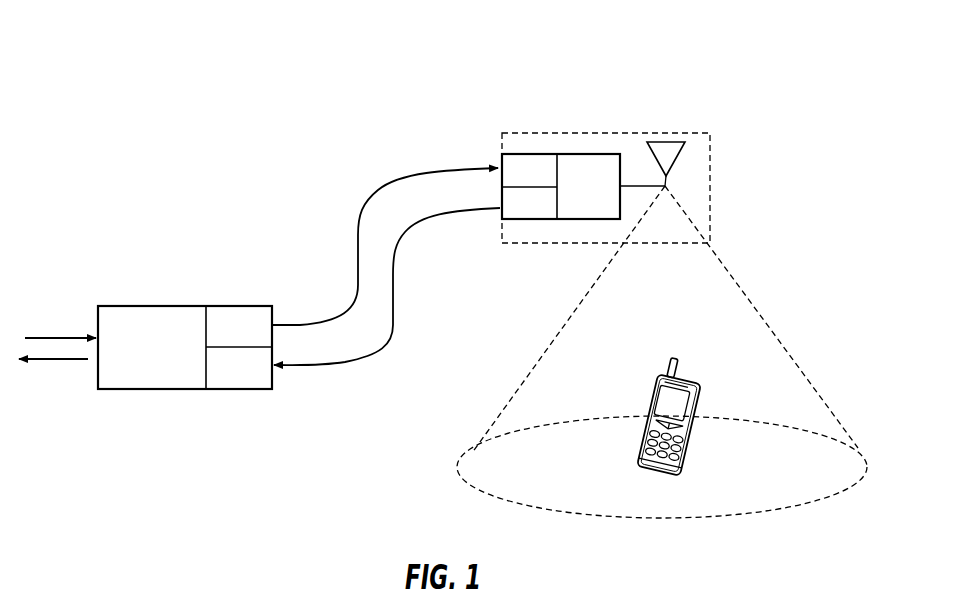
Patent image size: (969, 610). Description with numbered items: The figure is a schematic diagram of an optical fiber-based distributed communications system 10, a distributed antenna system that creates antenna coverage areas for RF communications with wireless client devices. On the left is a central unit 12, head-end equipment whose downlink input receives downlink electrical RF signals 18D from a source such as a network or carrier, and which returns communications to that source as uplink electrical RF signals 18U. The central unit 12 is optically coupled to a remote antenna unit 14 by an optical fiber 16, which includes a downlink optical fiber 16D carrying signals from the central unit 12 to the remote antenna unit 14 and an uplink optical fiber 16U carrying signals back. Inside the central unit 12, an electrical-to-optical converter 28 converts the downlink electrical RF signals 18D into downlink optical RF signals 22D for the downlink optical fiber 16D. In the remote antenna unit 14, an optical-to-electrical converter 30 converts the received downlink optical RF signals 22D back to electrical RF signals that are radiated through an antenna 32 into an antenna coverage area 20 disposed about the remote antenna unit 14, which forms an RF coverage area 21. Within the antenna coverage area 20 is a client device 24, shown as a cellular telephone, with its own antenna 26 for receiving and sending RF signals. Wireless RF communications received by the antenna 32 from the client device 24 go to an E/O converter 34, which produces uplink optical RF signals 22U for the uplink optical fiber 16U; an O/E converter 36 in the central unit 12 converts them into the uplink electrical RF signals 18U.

The optical fiber-based distributed communications system 10 is at (474, 78).
The central unit 12 is at (152, 306).
The remote antenna unit 14 is at (590, 133).
The optical fiber 16 is at (386, 237).
The downlink optical fiber 16D is at (433, 168).
The uplink optical fiber 16U is at (424, 226).
The downlink electrical RF signals 18D is at (50, 334).
The uplink electrical RF signals 18U is at (54, 364).
The antenna coverage area 20 is at (736, 272).
The RF coverage area 21 is at (408, 496).
The downlink optical RF signals 22D is at (354, 218).
The uplink optical RF signals 22U is at (396, 338).
The client device 24 is at (700, 430).
The antenna 26 is at (672, 364).
The electrical-to-optical converter 28 is at (232, 306).
The optical-to-electrical converter 30 is at (522, 154).
The antenna 32 is at (688, 168).
The E/O converter 34 is at (540, 219).
The O/E converter 36 is at (232, 389).